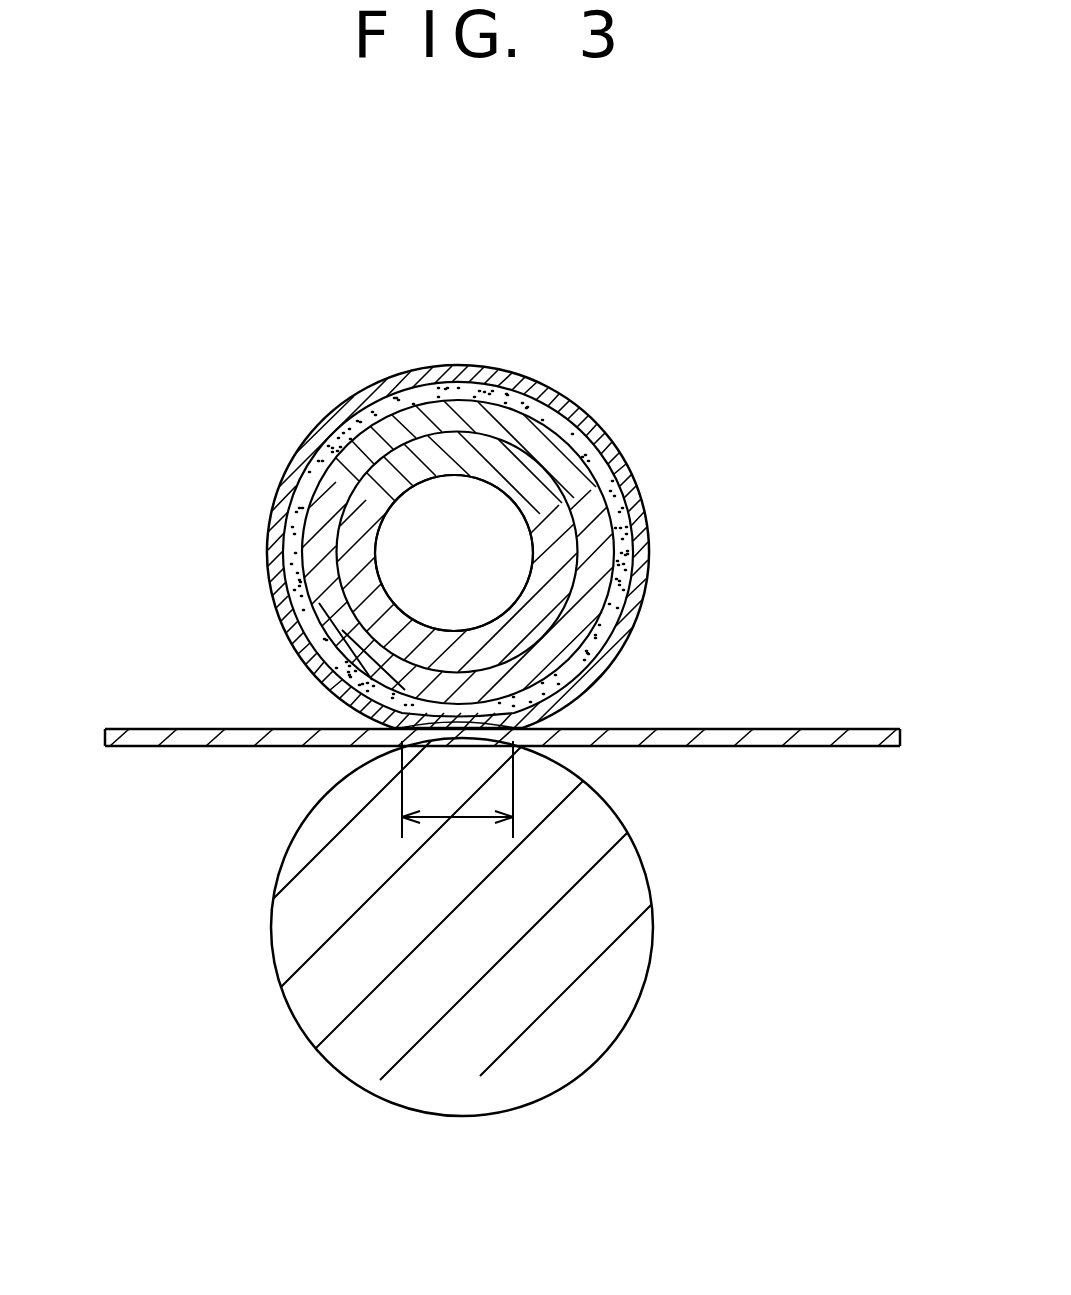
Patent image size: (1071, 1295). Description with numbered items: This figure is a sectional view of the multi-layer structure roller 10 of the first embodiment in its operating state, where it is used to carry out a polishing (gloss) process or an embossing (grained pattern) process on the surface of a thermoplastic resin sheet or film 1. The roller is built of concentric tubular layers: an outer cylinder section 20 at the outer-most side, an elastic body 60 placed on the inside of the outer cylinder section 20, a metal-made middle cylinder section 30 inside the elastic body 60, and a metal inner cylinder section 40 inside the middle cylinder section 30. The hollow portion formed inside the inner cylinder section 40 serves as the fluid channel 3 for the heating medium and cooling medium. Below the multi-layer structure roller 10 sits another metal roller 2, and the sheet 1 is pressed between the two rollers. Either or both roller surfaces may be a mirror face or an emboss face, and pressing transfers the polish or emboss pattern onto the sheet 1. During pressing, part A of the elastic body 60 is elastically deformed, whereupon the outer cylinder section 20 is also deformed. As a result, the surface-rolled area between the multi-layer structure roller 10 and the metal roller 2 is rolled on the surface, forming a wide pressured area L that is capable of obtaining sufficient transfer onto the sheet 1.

The multi-layer structure roller 10 is at (338, 180).
The outer cylinder section 20 is at (272, 506).
The elastic body 60 is at (297, 457).
The middle cylinder section 30 is at (367, 440).
The inner cylinder section 40 is at (410, 457).
The fluid channel 3 is at (480, 526).
The thermoplastic resin sheet 1 is at (782, 737).
The metal roller 2 is at (562, 1045).
The part of the elastic body A is at (450, 704).
The pressured area L is at (457, 789).